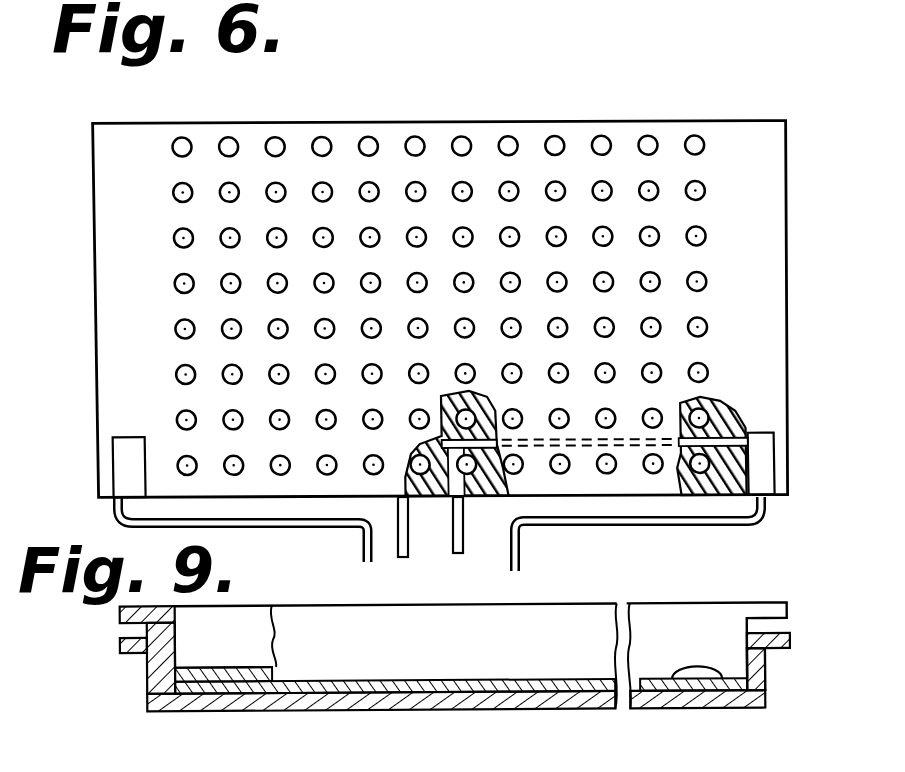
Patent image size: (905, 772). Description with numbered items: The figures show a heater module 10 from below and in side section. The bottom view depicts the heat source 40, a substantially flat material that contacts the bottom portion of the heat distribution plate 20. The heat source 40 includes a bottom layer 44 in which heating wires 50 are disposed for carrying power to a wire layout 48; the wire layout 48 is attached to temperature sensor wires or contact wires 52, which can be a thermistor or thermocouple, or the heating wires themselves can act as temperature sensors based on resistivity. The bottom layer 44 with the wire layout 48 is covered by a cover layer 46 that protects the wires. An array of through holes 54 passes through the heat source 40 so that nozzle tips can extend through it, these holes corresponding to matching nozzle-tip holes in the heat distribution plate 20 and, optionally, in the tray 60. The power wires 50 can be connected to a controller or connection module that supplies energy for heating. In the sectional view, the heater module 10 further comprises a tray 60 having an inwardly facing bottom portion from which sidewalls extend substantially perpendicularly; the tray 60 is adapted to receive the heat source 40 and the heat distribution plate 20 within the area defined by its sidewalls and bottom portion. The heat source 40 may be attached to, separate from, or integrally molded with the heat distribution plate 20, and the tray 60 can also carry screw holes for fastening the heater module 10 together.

In FIG. 9, the heater module 10 is at (342, 711).
In FIG. 9, the heat distribution plate 20 is at (765, 606).
In FIG. 6, the heat source 40 is at (758, 74).
In FIG. 9, the heat source 40 is at (722, 695).
In FIG. 6, the bottom layer 44 is at (702, 470).
In FIG. 6, the cover layer 46 is at (153, 135).
In FIG. 6, the wire layout 48 is at (508, 498).
In FIG. 6, the heating wires 50 is at (638, 527).
In FIG. 6, the temperature sensor wires 52 is at (455, 532).
In FIG. 6, the through holes for nozzle tips 54 is at (598, 139).
In FIG. 9, the tray 60 is at (764, 662).